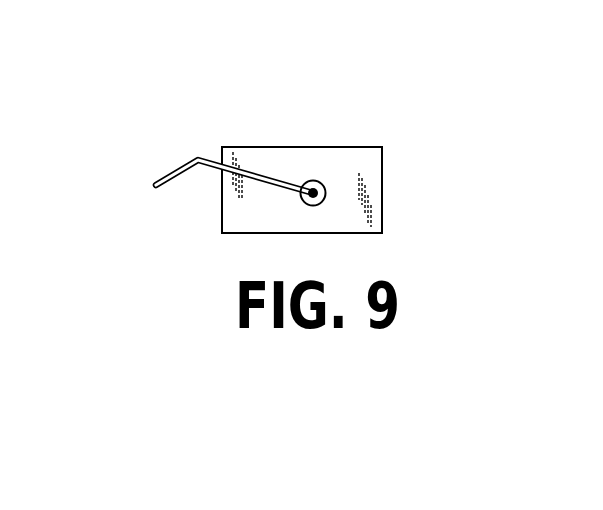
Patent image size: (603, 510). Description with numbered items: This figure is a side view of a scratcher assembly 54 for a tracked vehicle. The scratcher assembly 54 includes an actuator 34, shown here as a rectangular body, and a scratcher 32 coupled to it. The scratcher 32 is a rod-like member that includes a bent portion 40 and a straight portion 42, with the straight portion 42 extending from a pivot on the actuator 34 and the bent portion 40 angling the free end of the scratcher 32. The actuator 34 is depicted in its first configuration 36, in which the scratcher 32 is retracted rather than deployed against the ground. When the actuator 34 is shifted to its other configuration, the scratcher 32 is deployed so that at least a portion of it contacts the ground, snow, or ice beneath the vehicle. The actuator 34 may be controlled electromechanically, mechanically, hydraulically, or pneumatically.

The scratcher 32 is at (208, 159).
The actuator 34 is at (365, 147).
The first configuration 36 is at (415, 185).
The bent portion 40 is at (203, 170).
The straight portion 42 is at (278, 177).
The scratcher assembly 54 is at (475, 88).